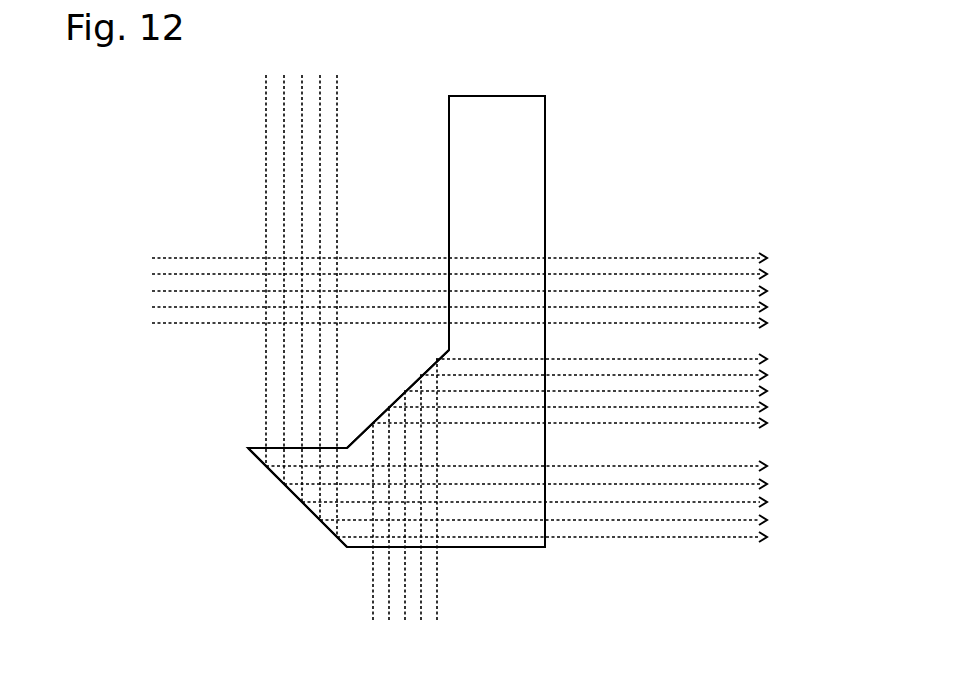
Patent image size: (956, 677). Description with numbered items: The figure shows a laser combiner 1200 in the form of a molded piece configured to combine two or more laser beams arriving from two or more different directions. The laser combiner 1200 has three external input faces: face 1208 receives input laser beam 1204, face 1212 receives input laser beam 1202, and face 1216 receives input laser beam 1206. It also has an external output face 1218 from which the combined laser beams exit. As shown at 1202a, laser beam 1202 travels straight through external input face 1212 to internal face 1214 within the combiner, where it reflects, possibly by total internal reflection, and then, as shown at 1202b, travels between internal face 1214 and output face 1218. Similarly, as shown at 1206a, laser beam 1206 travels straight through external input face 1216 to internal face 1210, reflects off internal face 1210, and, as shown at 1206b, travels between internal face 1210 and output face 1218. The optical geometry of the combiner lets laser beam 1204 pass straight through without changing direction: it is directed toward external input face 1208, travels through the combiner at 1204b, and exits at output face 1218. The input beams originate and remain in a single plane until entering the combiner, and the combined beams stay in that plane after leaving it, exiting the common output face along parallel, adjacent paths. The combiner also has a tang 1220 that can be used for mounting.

The laser combiner 1200 is at (441, 59).
The input laser beam 1202 is at (257, 95).
The laser beam path through input face 1202a is at (285, 458).
The laser beam path to output face 1202b is at (518, 473).
The input laser beam 1204 is at (163, 252).
The laser beam path through combiner 1204b is at (518, 270).
The input laser beam 1206 is at (445, 607).
The laser beam path through input face 1206a is at (383, 527).
The laser beam path to output face 1206b is at (518, 372).
The external input face 1208 is at (449, 170).
The internal face 1210 is at (437, 362).
The external input face 1212 is at (259, 447).
The internal face 1214 is at (308, 512).
The external input face 1216 is at (473, 548).
The external output face 1218 is at (572, 197).
The tang 1220 is at (525, 147).